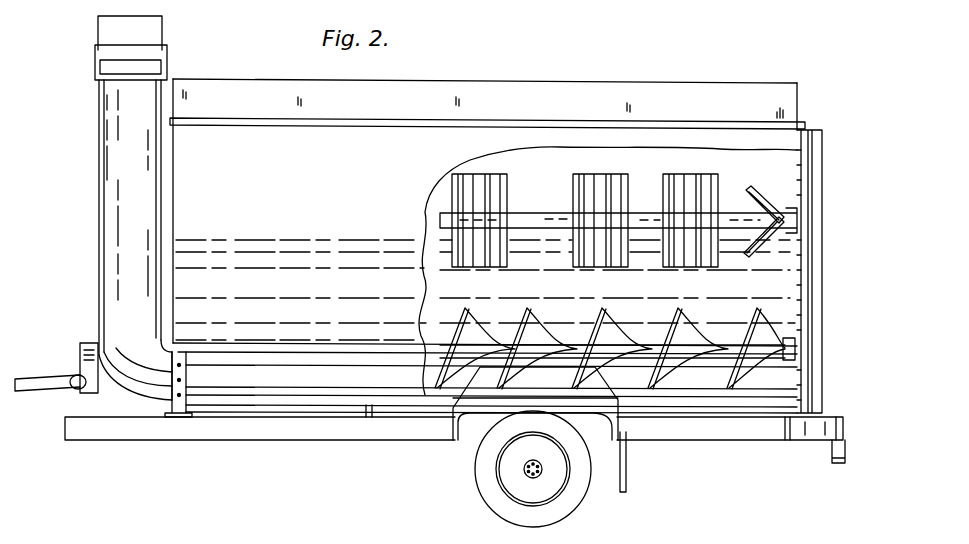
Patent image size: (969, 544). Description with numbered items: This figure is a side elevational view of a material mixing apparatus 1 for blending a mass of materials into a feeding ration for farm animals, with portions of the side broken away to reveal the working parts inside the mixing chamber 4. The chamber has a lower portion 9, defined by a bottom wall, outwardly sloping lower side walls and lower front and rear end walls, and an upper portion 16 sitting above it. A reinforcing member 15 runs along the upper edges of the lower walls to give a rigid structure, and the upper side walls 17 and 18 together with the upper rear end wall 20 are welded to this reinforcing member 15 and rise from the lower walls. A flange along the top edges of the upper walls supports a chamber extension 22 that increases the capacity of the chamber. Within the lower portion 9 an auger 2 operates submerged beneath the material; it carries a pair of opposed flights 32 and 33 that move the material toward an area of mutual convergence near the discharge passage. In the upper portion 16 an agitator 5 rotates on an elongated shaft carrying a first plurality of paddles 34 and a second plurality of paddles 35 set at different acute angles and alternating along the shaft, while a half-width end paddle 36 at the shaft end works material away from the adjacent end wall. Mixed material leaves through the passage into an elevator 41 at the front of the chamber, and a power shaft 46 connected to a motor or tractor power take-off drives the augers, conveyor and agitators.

The material mixing apparatus 1 is at (712, 49).
The auger 2 is at (620, 320).
The mixing chamber 4 is at (538, 142).
The agitator 5 is at (533, 220).
The lower portion 9 is at (287, 379).
The reinforcing member 15 is at (331, 345).
The upper portion 16 is at (392, 143).
The upper side wall 17 is at (247, 140).
The upper side wall 18 is at (780, 152).
The upper rear end wall 20 is at (803, 181).
The chamber extension 22 is at (553, 90).
The flight 32 is at (466, 303).
The flight 33 is at (684, 312).
The paddles 34 is at (688, 178).
The paddles 35 is at (588, 245).
The end paddle 36 is at (760, 201).
The elevator 41 is at (99, 228).
The power shaft 46 is at (48, 375).